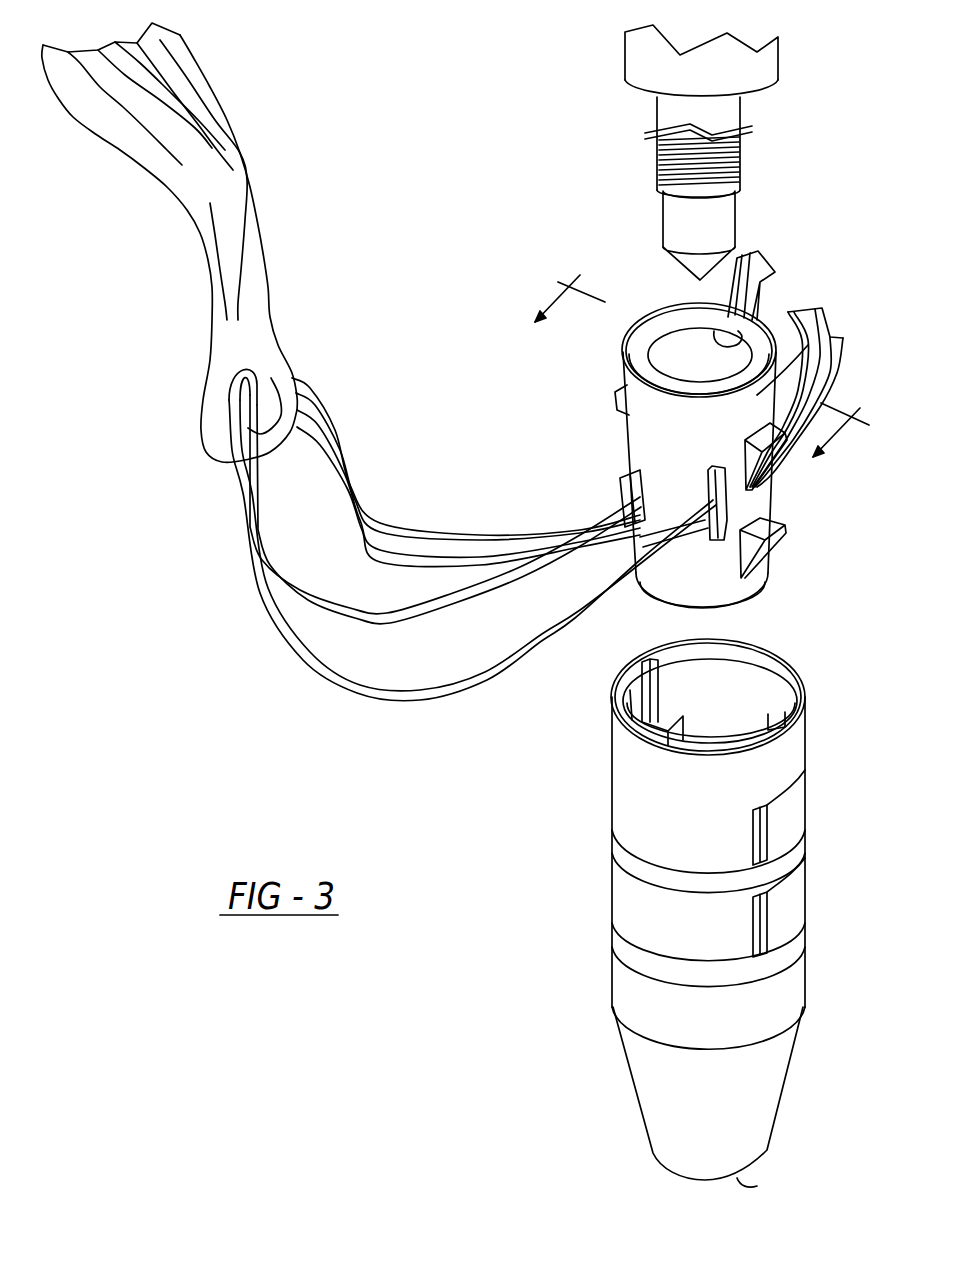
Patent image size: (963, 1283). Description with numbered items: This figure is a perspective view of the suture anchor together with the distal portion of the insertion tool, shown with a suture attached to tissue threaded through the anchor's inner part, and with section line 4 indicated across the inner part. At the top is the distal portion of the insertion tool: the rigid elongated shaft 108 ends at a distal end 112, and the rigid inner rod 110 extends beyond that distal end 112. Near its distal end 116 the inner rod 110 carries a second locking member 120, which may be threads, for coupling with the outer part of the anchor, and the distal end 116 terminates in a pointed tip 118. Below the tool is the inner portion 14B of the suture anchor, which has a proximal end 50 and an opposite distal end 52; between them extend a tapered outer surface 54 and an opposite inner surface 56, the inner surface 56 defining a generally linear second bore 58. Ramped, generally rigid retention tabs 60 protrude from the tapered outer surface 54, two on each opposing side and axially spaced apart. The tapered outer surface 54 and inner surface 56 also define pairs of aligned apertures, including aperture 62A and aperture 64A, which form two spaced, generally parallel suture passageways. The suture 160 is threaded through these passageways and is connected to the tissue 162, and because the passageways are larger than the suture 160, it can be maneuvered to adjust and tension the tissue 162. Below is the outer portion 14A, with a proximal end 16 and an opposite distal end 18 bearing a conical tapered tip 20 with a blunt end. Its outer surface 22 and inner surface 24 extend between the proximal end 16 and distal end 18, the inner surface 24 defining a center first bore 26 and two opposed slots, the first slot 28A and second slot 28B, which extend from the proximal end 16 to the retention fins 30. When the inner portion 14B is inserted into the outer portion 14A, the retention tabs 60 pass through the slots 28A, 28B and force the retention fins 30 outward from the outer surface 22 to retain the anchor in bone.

The elongated shaft 108 is at (720, 75).
The distal end of the elongated shaft 112 is at (767, 92).
The inner rod 110 is at (727, 115).
The second locking member 120 is at (733, 153).
The distal end of the inner rod 116 is at (685, 213).
The pointed tip 118 is at (683, 285).
The inner portion 14B is at (662, 435).
The proximal end of the inner portion 50 is at (633, 315).
The second bore 58 is at (680, 350).
The distal end of the inner portion 52 is at (765, 590).
The inner surface of the inner portion 56 is at (780, 290).
The tapered outer surface 54 is at (815, 318).
The ramped retention tabs 60 is at (617, 397).
The aperture of the second pair 64A is at (597, 524).
The aperture of the first pair 62A is at (718, 500).
The section line 4- 4 is at (687, 385).
The tissue 162 is at (247, 205).
The suture 160 is at (297, 652).
The proximal end of the outer portion 16 is at (757, 643).
The inner surface of the outer portion 24 is at (753, 683).
The first bore 26 is at (767, 707).
The first slot 28A is at (633, 660).
The second slot 28B is at (805, 747).
The outer surface of the outer portion 22 is at (643, 802).
The outer portion 14A is at (623, 902).
The retention fins 30 is at (618, 748).
The tapered tip 20 is at (737, 1113).
The distal end of the outer portion 18 is at (737, 1178).